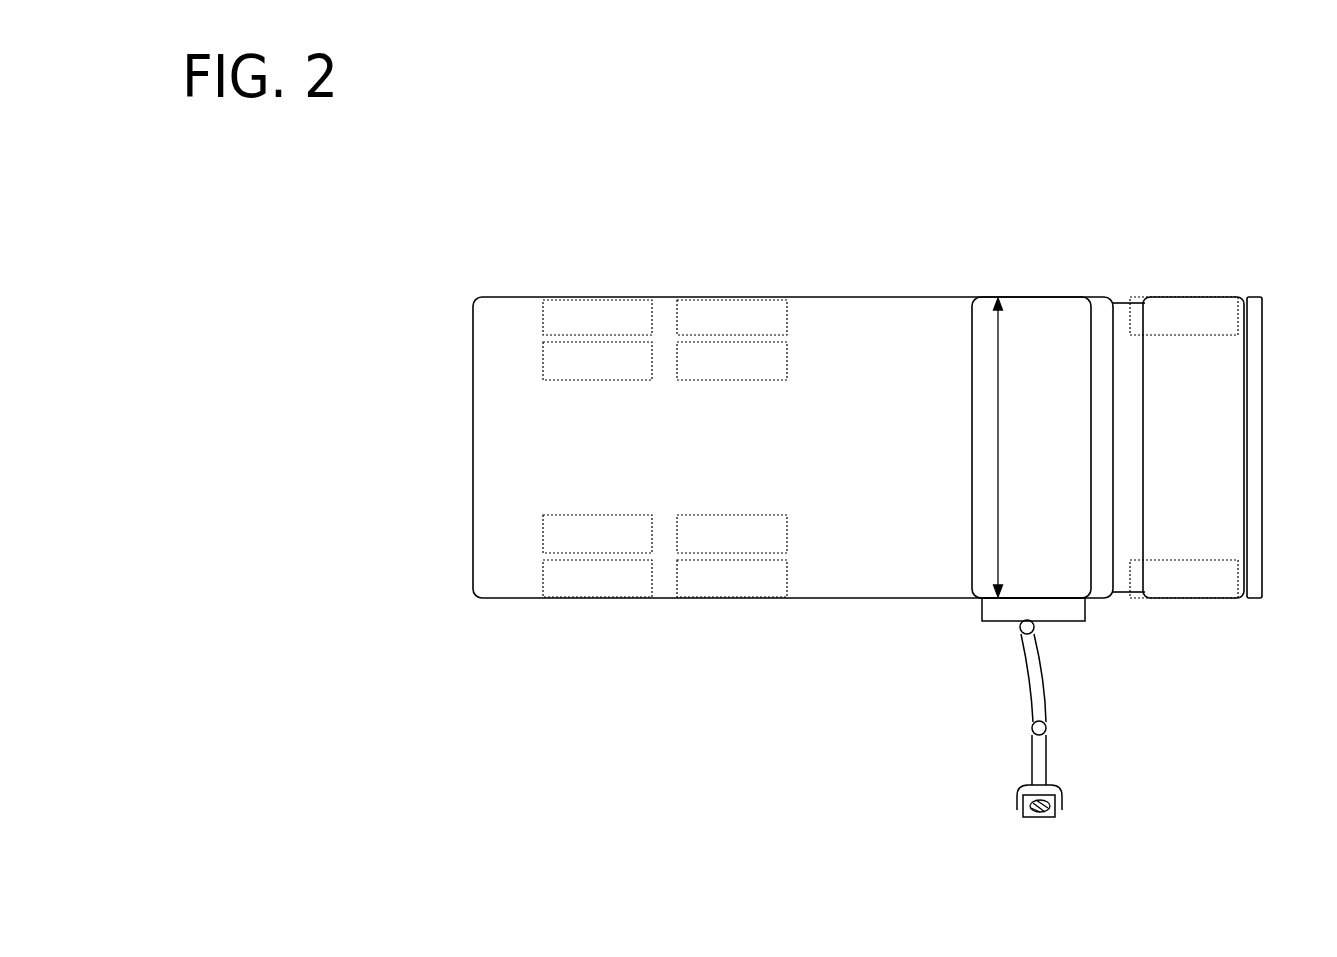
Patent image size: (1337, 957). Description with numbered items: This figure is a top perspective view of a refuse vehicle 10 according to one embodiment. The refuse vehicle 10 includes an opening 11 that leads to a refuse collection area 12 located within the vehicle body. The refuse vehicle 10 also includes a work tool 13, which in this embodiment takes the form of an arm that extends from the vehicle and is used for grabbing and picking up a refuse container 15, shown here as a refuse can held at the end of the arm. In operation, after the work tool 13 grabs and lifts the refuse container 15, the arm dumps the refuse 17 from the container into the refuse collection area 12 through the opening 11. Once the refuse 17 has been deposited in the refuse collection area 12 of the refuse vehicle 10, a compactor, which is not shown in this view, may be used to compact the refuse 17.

The refuse vehicle 10 is at (898, 525).
The opening 11 is at (998, 378).
The refuse collection area 12 is at (1033, 449).
The work tool 13 is at (1048, 728).
The refuse container 15 is at (1053, 815).
The refuse 17 is at (1040, 808).